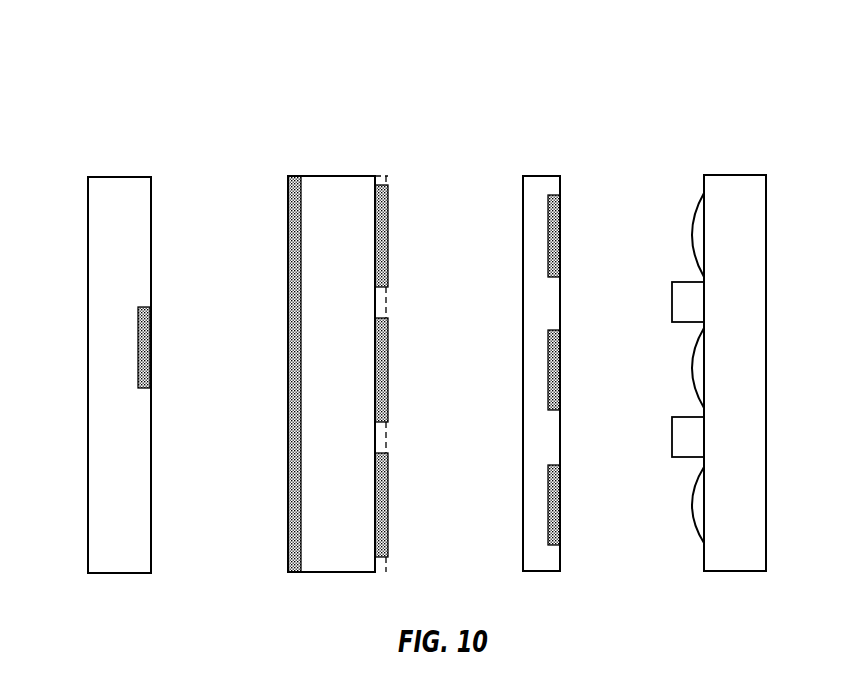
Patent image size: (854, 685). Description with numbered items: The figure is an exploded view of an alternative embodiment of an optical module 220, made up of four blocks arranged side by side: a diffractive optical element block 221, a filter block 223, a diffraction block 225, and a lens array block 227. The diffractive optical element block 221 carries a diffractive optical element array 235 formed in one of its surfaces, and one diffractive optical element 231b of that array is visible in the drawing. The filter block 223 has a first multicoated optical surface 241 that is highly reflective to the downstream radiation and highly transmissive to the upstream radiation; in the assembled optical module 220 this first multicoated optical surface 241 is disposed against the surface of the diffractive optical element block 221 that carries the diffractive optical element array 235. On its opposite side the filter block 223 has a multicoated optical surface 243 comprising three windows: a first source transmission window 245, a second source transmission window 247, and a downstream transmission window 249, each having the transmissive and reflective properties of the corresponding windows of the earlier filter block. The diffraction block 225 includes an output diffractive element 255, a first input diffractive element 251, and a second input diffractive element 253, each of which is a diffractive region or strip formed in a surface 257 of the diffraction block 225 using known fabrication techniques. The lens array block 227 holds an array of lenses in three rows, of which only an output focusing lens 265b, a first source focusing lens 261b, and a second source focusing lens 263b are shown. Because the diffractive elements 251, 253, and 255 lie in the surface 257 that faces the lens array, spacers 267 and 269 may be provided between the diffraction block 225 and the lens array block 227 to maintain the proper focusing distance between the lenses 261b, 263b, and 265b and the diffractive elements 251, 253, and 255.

The optical module 220 is at (181, 70).
The diffractive optical element block 221 is at (118, 176).
The filter block 223 is at (338, 176).
The diffraction block 225 is at (540, 176).
The lens array block 227 is at (733, 176).
The diffractive optical element 231b is at (150, 347).
The diffractive optical element array 235 is at (141, 307).
The first multicoated optical surface 241 is at (288, 220).
The multicoated optical surface 243 is at (380, 177).
The first source transmission window 245 is at (388, 371).
The second source transmission window 247 is at (388, 507).
The downstream transmission window 249 is at (388, 237).
The first input diffractive element 251 is at (560, 370).
The second input diffractive element 253 is at (560, 505).
The output diffractive element 255 is at (560, 235).
The surface 257 is at (560, 183).
The first source focusing lens 261b is at (693, 370).
The second source focusing lens 263b is at (693, 505).
The output focusing lens 265b is at (693, 235).
The spacer 267 is at (673, 300).
The spacer 269 is at (673, 437).